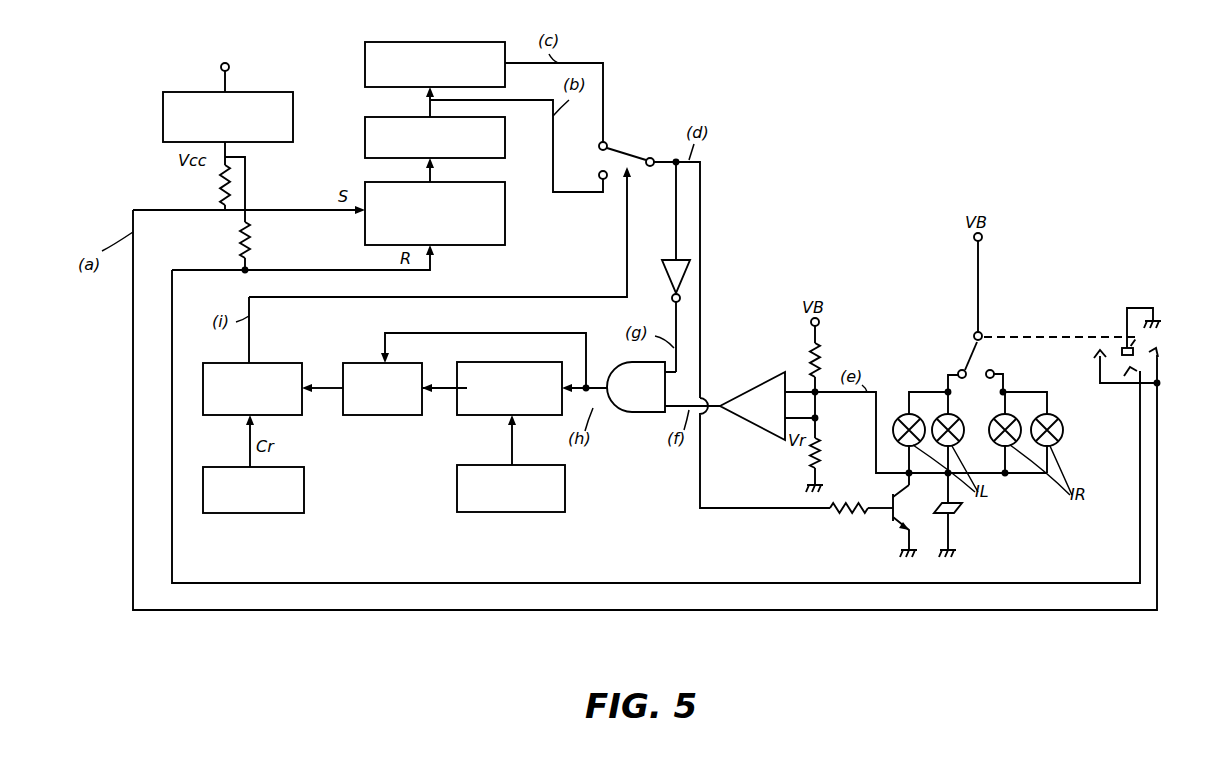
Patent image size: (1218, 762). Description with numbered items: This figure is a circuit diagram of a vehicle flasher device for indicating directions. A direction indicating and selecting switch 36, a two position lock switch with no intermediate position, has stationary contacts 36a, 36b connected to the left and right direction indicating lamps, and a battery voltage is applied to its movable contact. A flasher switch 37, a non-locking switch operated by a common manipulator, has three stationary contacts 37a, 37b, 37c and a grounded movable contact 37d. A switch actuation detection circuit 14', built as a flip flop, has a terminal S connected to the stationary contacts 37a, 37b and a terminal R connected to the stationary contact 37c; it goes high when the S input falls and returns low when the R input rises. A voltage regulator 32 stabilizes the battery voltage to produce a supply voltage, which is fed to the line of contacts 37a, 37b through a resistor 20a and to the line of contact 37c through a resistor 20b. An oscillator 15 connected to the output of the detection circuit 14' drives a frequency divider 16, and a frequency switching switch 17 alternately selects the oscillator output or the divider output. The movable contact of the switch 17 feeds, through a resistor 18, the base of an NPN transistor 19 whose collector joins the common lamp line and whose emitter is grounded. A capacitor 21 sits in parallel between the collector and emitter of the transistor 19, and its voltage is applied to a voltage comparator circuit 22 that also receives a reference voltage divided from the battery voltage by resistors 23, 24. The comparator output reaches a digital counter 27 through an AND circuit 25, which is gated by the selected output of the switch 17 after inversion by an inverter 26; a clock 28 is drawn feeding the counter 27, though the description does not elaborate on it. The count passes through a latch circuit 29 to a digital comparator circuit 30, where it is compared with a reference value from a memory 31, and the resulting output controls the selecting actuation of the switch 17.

The switch actuation detection circuit 14' is at (440, 229).
The oscillator 15 is at (365, 138).
The frequency divider 16 is at (365, 68).
The frequency switching switch 17 is at (629, 153).
The resistor 18 is at (851, 516).
The transistor 19 is at (900, 523).
The resistor 20a is at (220, 186).
The resistor 20b is at (250, 242).
The capacitor 21 is at (963, 509).
The voltage comparator circuit 22 is at (768, 426).
The resistor 23 is at (825, 357).
The resistor 24 is at (825, 457).
The AND circuit 25 is at (641, 415).
The inverter 26 is at (668, 272).
The digital counter 27 is at (469, 416).
The clock 28 is at (497, 513).
The latch circuit 29 is at (370, 416).
The digital comparator circuit 30 is at (276, 363).
The memory 31 is at (246, 514).
The voltage regulator 32 is at (163, 120).
The direction indicating and selecting switch 36 is at (972, 360).
The stationary contact 36a is at (956, 370).
The stationary contact 36b is at (993, 370).
The flasher switch 37 is at (1119, 360).
The stationary contact 37a is at (1093, 356).
The stationary contact 37b is at (1158, 356).
The stationary contact 37c is at (1128, 377).
The movable contact 37d is at (1120, 348).